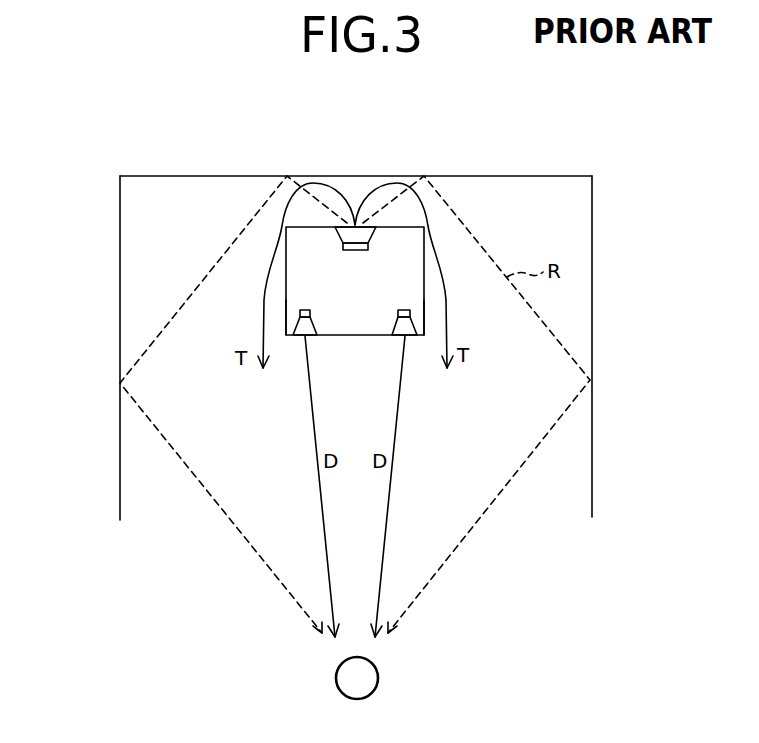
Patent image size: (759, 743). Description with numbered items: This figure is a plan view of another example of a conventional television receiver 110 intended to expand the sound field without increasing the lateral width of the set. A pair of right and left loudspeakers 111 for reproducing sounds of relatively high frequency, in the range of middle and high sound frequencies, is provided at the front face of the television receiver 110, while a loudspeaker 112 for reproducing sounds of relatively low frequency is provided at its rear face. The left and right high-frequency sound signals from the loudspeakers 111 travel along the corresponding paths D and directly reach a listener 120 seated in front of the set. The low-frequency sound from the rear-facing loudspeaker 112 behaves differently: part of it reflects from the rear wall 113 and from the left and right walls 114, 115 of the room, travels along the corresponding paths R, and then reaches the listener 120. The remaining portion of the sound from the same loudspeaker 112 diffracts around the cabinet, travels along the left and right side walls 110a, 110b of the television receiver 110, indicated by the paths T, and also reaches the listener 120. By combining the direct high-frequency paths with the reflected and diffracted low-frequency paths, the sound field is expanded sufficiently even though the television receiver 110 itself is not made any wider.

The television receiver 110 is at (424, 272).
The left side wall of the television receiver 110a is at (286, 303).
The right side wall of the television receiver 110b is at (424, 303).
The loudspeakers 111 is at (303, 310).
The loudspeaker 112 is at (355, 225).
The rear wall 113 is at (393, 175).
The left wall 114 is at (119, 321).
The right wall 115 is at (592, 312).
The listener 120 is at (370, 683).